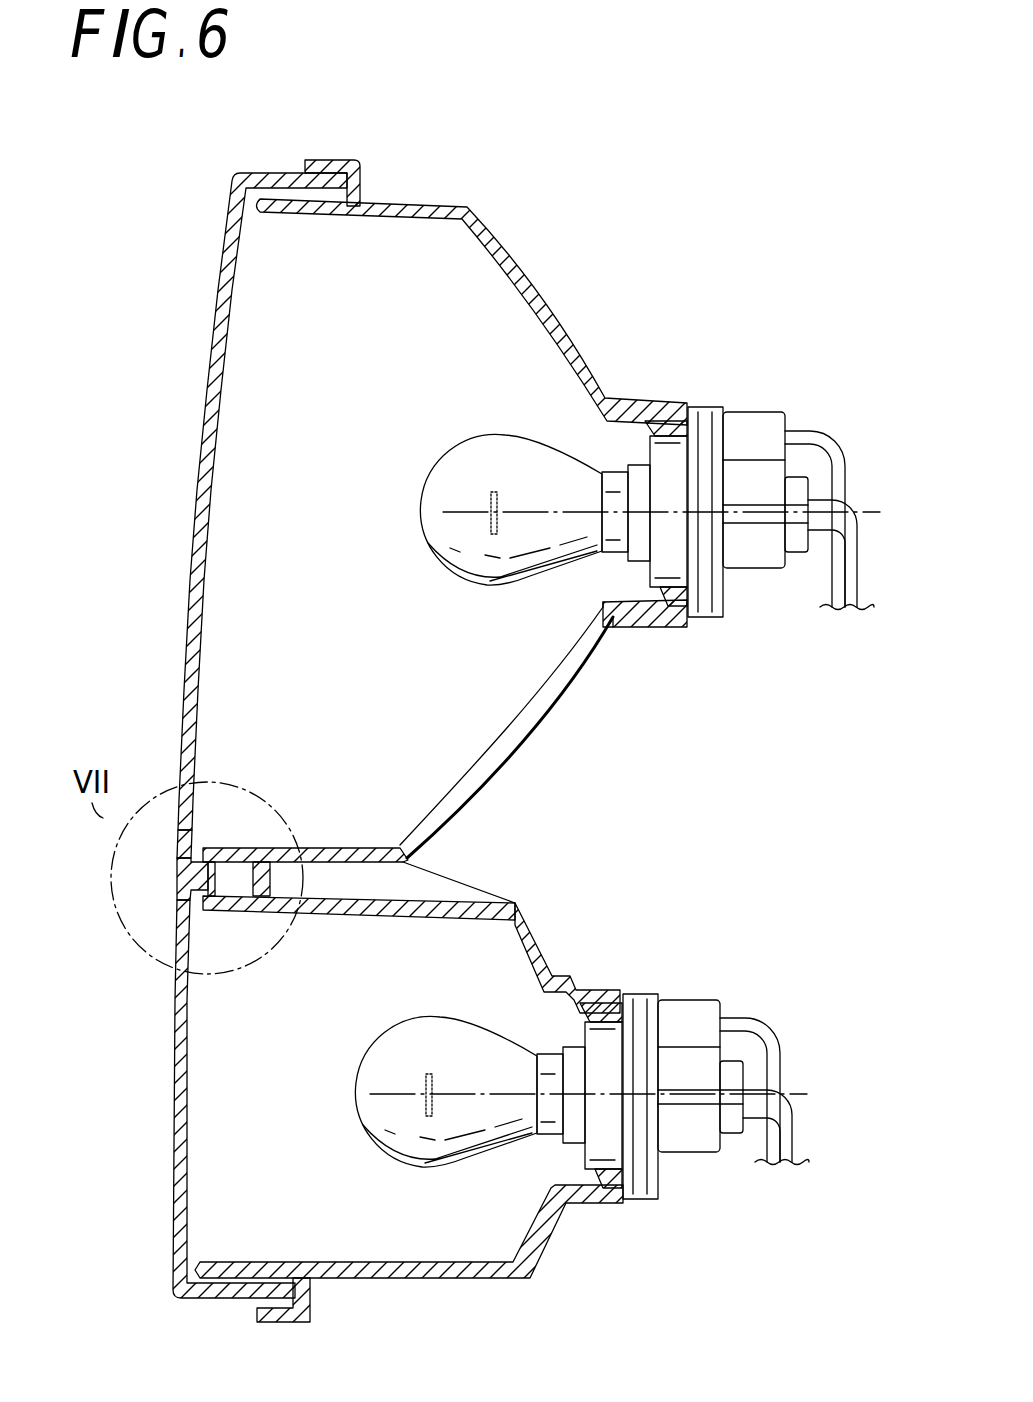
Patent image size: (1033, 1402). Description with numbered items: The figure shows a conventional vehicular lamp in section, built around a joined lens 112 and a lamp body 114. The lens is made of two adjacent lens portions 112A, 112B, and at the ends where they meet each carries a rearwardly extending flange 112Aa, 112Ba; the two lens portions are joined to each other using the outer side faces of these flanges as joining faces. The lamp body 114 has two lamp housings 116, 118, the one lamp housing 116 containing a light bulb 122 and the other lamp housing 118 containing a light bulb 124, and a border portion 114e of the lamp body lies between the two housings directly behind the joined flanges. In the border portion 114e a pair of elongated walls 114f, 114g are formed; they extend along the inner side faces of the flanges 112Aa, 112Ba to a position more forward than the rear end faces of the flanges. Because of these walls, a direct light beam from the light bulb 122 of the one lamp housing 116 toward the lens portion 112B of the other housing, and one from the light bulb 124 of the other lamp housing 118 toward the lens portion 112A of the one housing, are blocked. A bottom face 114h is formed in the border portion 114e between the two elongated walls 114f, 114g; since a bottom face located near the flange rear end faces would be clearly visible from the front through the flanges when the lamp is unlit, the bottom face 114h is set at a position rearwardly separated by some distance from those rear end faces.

The joined lens 112 is at (170, 740).
The lens portion 112A is at (178, 1040).
The flange 112Aa is at (210, 915).
The lens portion 112B is at (188, 578).
The flange 112Ba is at (203, 850).
The lamp body 114 is at (548, 756).
The border portion 114e is at (354, 840).
The elongated wall 114f is at (210, 908).
The elongated wall 114g is at (222, 850).
The bottom face 114h is at (270, 878).
The lamp housing 116 is at (300, 1156).
The lamp housing 118 is at (348, 535).
The light bulb 122 is at (436, 1019).
The light bulb 124 is at (518, 432).